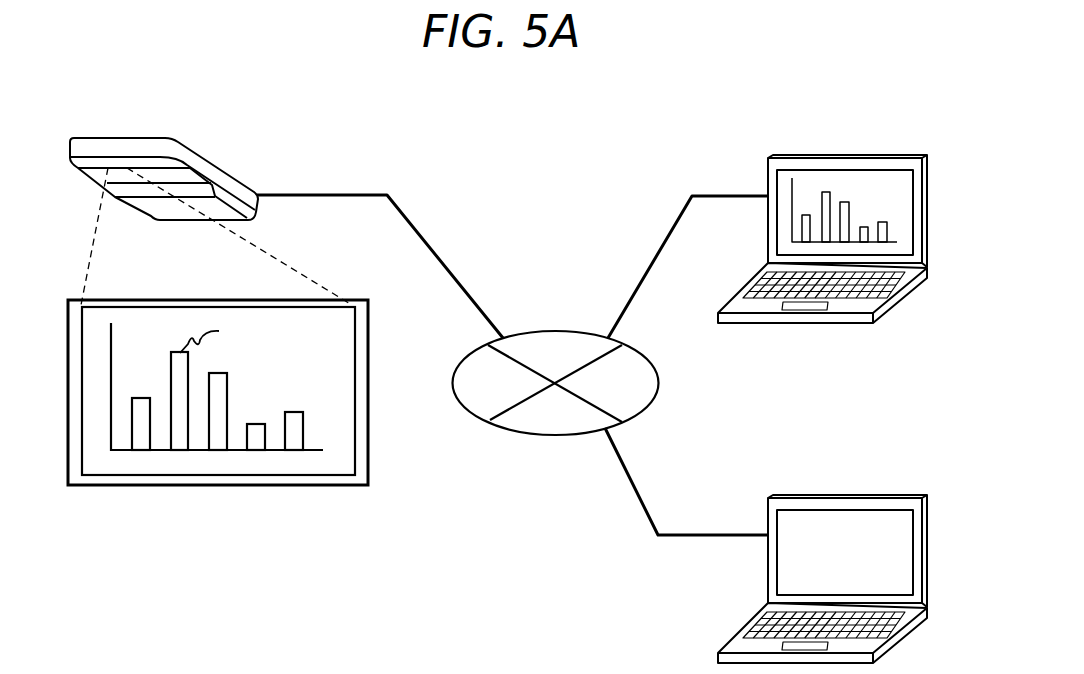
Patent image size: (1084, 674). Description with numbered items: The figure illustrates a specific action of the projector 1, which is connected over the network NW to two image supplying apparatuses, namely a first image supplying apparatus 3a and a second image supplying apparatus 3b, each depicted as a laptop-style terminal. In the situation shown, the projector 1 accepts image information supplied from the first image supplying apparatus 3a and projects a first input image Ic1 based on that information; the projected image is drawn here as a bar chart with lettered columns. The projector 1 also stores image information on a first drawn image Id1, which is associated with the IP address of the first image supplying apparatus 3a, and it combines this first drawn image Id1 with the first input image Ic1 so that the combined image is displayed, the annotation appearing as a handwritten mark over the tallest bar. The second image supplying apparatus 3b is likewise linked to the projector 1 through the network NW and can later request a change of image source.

The projector 1 is at (166, 143).
The first image supplying apparatus 3a is at (897, 167).
The second image supplying apparatus 3b is at (897, 507).
The network NW is at (558, 331).
The first input image Ic1 is at (98, 467).
The first drawn image Id1 is at (293, 337).